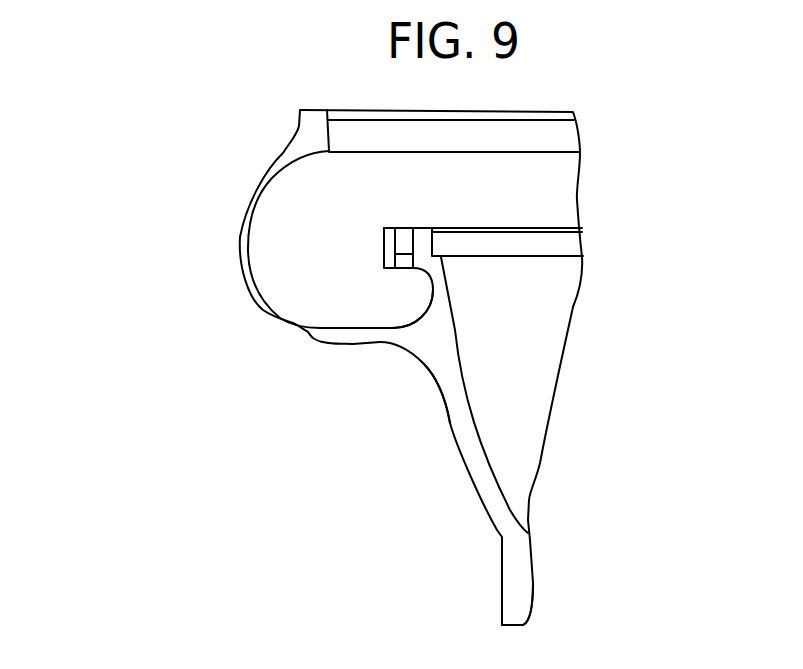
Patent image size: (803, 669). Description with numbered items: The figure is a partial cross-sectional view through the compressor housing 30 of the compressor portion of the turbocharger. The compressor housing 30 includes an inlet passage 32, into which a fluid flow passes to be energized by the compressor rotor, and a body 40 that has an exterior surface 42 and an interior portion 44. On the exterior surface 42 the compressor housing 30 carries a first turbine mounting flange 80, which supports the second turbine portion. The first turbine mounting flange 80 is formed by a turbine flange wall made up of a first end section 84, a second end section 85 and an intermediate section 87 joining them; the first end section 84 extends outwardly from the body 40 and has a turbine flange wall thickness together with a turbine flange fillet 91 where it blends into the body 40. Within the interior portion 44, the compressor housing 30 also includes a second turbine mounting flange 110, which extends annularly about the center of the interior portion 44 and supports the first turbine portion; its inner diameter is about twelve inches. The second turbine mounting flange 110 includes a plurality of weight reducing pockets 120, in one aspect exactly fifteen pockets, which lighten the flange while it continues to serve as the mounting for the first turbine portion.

The compressor housing 30 is at (197, 145).
The inlet passage 32 is at (273, 258).
The body 40 is at (353, 345).
The exterior surface 42 is at (277, 152).
The interior portion 44 is at (470, 181).
The first turbine mounting flange 80 is at (490, 572).
The first end section 84 is at (450, 367).
The second end section 85 is at (518, 607).
The intermediate section 87 is at (473, 460).
The turbine flange fillet 91 is at (417, 368).
The second turbine mounting flange 110 is at (363, 280).
The weight reducing pockets 120 is at (400, 242).